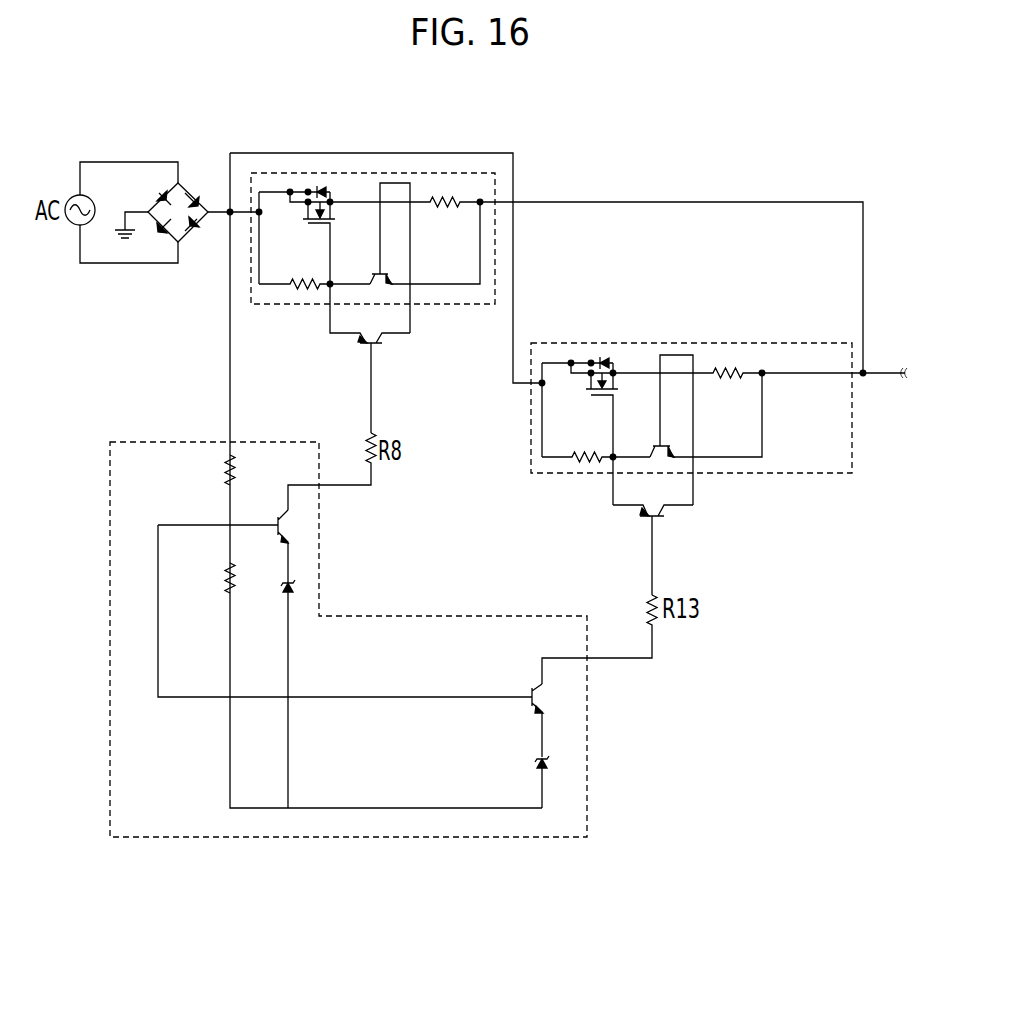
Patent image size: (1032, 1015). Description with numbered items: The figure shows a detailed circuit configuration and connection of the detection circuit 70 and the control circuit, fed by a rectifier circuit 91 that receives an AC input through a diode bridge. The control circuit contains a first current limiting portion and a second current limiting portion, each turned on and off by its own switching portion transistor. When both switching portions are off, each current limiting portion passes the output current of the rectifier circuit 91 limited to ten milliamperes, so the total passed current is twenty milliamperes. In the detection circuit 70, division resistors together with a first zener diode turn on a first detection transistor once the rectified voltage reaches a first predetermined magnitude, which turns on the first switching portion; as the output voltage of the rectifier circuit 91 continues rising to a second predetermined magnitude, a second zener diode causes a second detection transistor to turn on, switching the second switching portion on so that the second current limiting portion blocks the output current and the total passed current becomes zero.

The rectifier circuit 91 is at (185, 182).
The detection circuit 70 is at (172, 440).